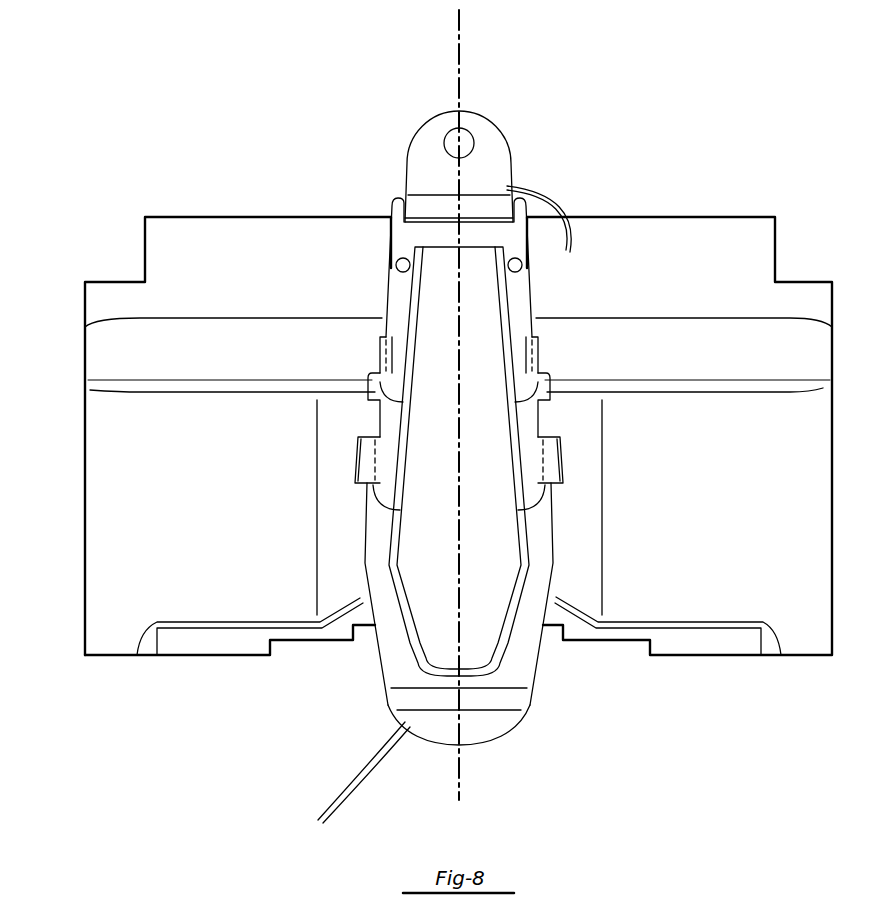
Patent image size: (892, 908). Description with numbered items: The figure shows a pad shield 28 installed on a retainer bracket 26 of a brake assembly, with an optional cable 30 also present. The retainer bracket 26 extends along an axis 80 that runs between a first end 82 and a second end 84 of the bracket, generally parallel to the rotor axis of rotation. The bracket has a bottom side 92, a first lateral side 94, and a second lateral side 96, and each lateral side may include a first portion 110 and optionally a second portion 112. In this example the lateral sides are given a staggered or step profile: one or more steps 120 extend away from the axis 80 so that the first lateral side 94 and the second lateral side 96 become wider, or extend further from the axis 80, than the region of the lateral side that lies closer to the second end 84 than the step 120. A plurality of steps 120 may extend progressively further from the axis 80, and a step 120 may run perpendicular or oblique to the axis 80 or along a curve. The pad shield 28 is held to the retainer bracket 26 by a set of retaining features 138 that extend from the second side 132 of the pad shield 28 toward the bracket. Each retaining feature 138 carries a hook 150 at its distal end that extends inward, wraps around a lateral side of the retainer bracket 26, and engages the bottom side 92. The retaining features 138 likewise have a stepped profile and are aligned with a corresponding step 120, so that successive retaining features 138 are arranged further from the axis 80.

The retainer bracket 26 is at (460, 498).
The pad shield 28 is at (85, 282).
The cable 30 is at (347, 782).
The axis 80 is at (462, 62).
The first end 82 is at (478, 742).
The second end 84 is at (440, 108).
The bottom side 92 is at (429, 558).
The first lateral side 94 is at (536, 296).
The second lateral side 96 is at (382, 296).
The first portion 110 is at (375, 402).
The second portion 112 is at (377, 665).
The step 120 is at (515, 402).
The second side 132 is at (153, 512).
The retaining feature 138 is at (527, 357).
The hook 150 is at (394, 462).